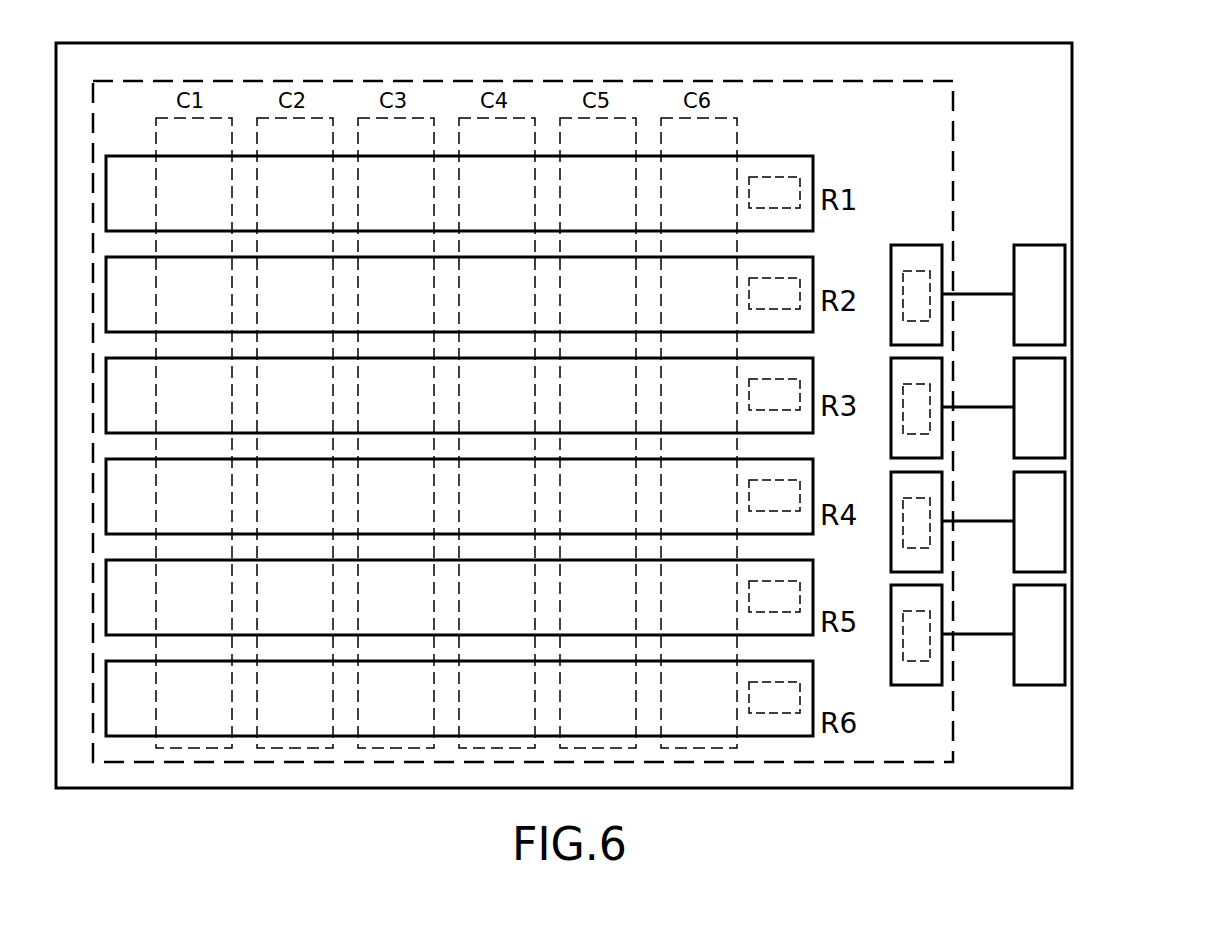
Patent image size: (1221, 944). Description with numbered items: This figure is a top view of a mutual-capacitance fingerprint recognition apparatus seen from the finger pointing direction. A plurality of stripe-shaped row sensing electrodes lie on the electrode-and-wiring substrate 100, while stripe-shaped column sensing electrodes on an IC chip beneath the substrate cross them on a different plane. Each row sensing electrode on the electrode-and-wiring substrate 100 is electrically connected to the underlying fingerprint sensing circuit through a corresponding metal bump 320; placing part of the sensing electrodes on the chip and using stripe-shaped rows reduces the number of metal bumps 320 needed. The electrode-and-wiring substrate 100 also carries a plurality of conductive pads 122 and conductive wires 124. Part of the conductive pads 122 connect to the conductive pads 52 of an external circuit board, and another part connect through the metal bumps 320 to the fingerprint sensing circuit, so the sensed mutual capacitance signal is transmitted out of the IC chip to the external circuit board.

The electrode-and-wiring substrate 100 is at (1037, 740).
The metal bump 320 is at (785, 183).
The conductive pad 122 is at (915, 252).
The conductive wire 124 is at (977, 293).
The conductive pad of the external circuit board 52 is at (1052, 272).